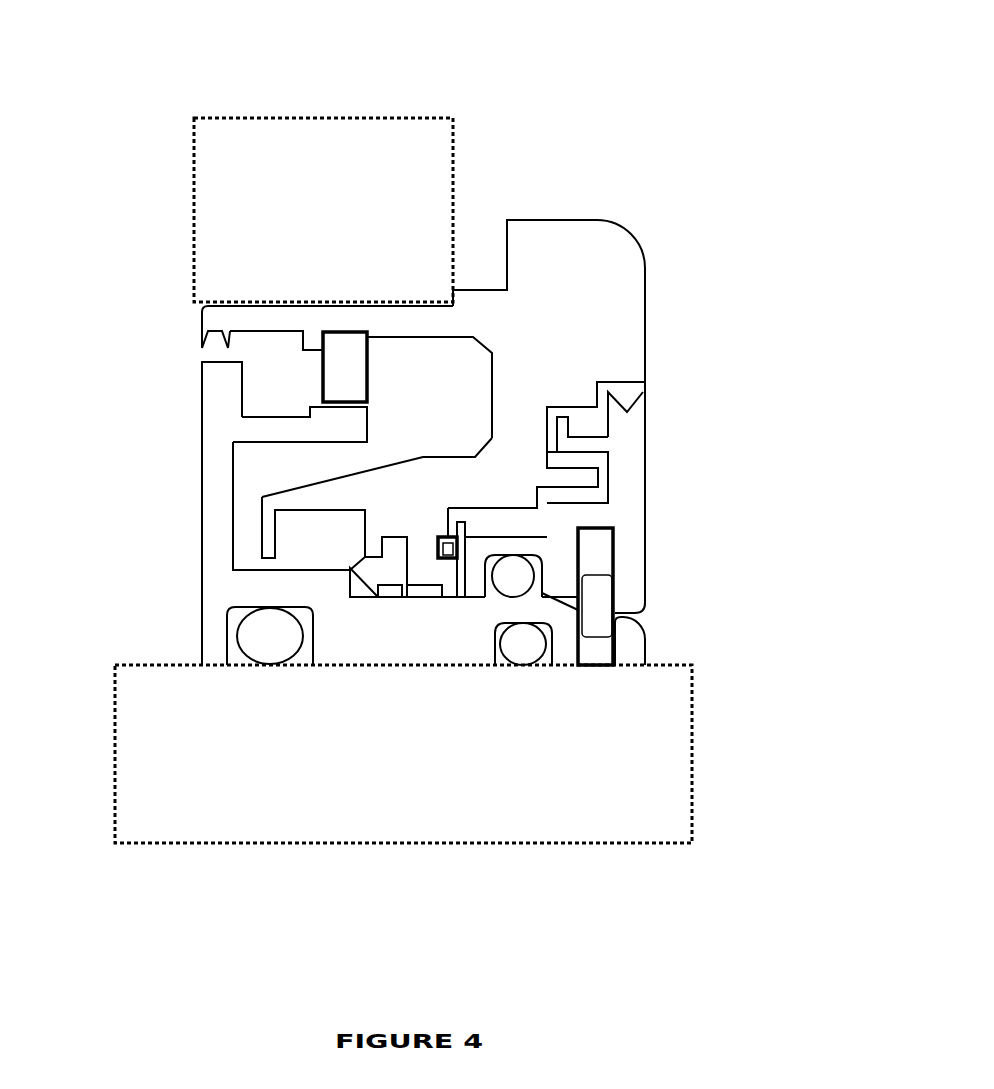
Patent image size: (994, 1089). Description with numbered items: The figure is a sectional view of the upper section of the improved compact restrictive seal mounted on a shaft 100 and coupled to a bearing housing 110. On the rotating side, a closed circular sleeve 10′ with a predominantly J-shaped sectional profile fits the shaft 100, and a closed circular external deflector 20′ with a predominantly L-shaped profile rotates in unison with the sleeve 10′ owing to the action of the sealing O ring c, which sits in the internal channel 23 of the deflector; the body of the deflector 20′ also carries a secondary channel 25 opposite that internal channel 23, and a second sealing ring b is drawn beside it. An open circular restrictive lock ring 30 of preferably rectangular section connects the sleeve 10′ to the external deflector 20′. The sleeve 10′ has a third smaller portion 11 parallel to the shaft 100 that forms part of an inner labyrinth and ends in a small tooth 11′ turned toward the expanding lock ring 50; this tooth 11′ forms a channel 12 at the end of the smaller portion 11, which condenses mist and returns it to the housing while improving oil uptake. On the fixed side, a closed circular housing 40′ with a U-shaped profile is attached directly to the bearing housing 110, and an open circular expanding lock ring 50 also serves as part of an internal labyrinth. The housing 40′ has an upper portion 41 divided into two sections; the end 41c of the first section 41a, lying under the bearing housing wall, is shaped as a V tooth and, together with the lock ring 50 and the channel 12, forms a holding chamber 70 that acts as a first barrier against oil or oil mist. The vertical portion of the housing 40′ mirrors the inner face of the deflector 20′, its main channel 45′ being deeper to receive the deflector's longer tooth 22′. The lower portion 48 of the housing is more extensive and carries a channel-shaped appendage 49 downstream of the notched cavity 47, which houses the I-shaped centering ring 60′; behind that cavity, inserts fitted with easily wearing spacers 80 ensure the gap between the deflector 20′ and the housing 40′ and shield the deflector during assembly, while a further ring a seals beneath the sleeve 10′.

The bearing housing 110 is at (402, 128).
The holding chamber 70 is at (295, 362).
The housing 40′ is at (585, 248).
The first section 41a is at (280, 318).
The V tooth shaped end 41c is at (207, 327).
The upper portion 41 is at (428, 323).
The lower portion 48 is at (427, 487).
The appendage 49 is at (307, 503).
The expanding lock ring 50 is at (348, 368).
The sleeve 10′ is at (212, 583).
The third smaller portion 11 is at (272, 427).
The channel 12 is at (280, 408).
The small tooth 11′ is at (343, 425).
The seal ring a is at (270, 637).
The centering ring 60′ is at (372, 570).
The notched cavity 47 is at (422, 555).
The spacers 80 is at (446, 550).
The external deflector 20′ is at (628, 502).
The secondary channel 25 is at (490, 538).
The main channel 45′ is at (577, 460).
The tooth 22′ is at (588, 442).
The restrictive lock ring 30 is at (597, 598).
The sealing O ring c is at (510, 587).
The internal channel 23 is at (538, 600).
The seal ring b is at (523, 645).
The shaft 100 is at (668, 750).